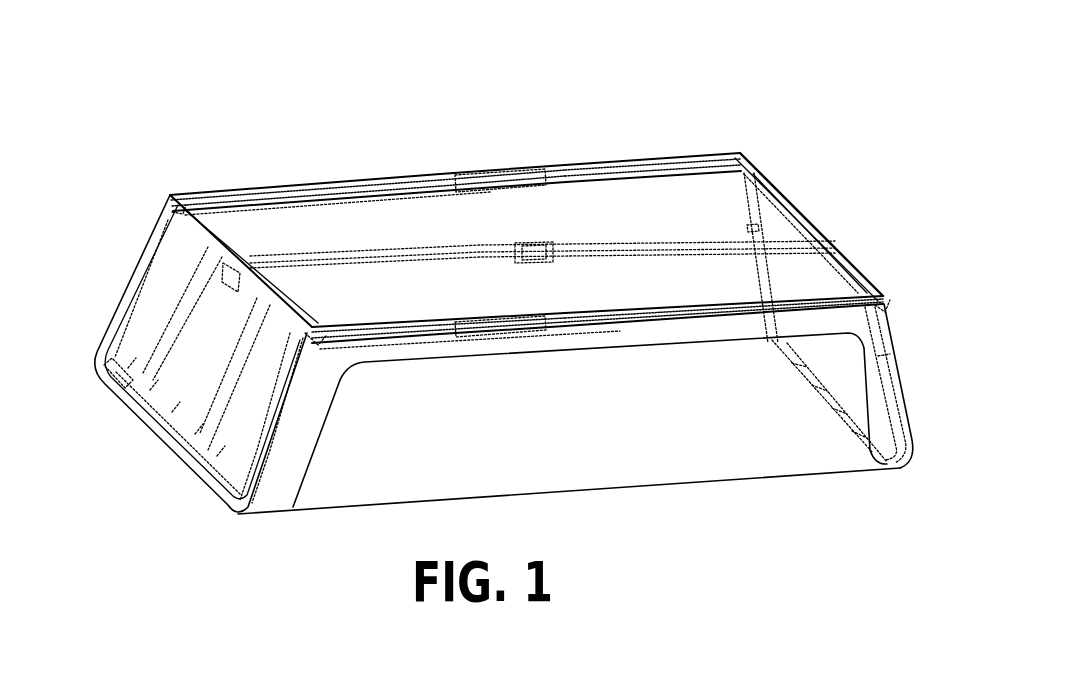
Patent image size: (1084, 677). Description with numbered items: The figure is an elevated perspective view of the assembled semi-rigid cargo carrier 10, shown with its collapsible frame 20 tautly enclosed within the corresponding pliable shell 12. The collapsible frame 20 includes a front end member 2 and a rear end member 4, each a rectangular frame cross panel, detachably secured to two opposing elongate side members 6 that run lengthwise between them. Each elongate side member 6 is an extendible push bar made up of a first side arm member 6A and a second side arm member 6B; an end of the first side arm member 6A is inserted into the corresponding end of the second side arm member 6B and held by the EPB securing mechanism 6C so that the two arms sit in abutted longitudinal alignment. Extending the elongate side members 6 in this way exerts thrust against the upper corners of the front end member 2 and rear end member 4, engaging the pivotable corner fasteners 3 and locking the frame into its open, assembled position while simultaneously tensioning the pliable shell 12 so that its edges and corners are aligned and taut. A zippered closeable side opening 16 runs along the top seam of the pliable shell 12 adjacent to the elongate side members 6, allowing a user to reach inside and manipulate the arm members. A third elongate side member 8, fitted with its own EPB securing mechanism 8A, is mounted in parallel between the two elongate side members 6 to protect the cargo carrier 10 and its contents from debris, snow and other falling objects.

The front end member 2 is at (149, 245).
The pivotable corner fasteners 3 is at (167, 196).
The rear end member 4 is at (899, 355).
The elongate side member 6 is at (538, 184).
The first side arm member 6A is at (255, 188).
The second side arm member 6B is at (567, 165).
The EPB securing mechanism 6C is at (450, 182).
The third elongate side member 8 is at (703, 243).
The EPB securing mechanism 8A is at (543, 245).
The semi-rigid cargo carrier 10 is at (820, 147).
The pliable shell 12 is at (330, 507).
The zippered closeable side opening 16 is at (605, 167).
The collapsible frame 20 is at (822, 233).